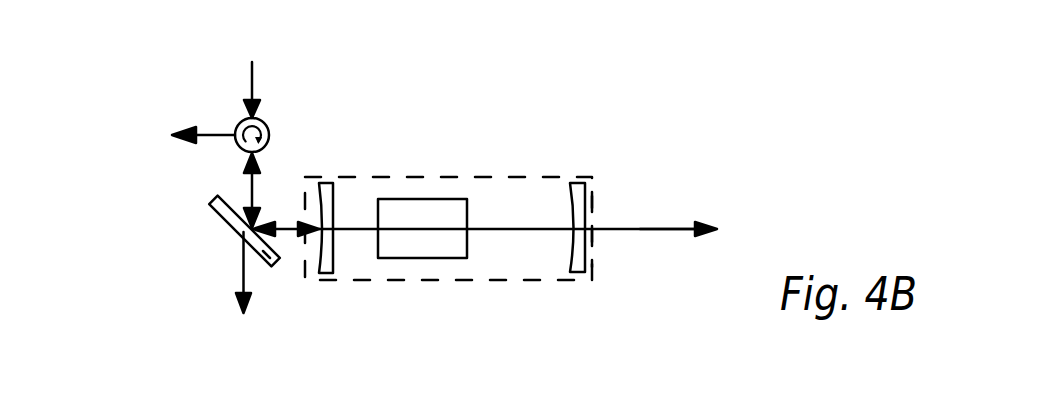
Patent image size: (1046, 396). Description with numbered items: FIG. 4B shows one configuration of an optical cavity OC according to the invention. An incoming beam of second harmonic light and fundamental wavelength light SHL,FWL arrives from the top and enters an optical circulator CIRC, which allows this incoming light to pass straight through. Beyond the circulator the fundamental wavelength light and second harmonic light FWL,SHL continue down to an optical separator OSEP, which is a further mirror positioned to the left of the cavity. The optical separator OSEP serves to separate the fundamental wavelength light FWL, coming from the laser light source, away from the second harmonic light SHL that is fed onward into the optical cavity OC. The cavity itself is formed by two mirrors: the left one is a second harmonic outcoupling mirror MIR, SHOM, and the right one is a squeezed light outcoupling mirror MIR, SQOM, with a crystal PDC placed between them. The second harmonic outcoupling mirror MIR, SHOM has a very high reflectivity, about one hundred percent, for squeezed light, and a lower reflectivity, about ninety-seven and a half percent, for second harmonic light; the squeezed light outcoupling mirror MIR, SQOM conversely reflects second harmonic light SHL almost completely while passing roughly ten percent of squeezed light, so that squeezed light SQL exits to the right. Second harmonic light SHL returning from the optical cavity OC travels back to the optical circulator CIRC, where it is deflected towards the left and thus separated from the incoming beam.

The second harmonic light and fundamental wavelength light SHL,FWL is at (252, 80).
The optical circulator CIRC is at (236, 124).
The second harmonic light SHL is at (203, 137).
The fundamental wavelength light and second harmonic light FWL,SHL is at (251, 200).
The fundamental wavelength light FWL is at (245, 278).
The optical separator OSEP is at (262, 262).
The second harmonic output mirror MIR, SHOM is at (327, 183).
The parametric down-conversion crystal PDC is at (413, 198).
The squeezed light output mirror MIR, SQOM is at (576, 183).
The optical cavity OC is at (592, 203).
The squeezed light SQL is at (677, 229).